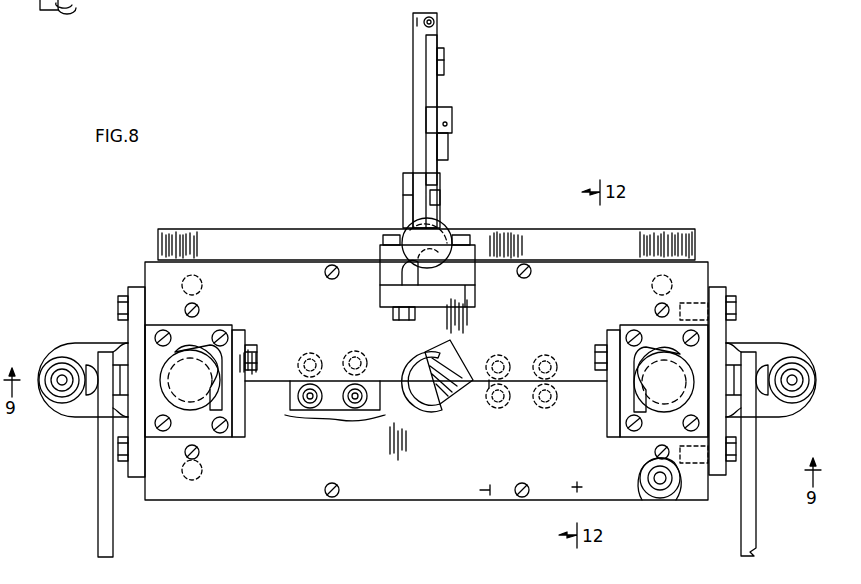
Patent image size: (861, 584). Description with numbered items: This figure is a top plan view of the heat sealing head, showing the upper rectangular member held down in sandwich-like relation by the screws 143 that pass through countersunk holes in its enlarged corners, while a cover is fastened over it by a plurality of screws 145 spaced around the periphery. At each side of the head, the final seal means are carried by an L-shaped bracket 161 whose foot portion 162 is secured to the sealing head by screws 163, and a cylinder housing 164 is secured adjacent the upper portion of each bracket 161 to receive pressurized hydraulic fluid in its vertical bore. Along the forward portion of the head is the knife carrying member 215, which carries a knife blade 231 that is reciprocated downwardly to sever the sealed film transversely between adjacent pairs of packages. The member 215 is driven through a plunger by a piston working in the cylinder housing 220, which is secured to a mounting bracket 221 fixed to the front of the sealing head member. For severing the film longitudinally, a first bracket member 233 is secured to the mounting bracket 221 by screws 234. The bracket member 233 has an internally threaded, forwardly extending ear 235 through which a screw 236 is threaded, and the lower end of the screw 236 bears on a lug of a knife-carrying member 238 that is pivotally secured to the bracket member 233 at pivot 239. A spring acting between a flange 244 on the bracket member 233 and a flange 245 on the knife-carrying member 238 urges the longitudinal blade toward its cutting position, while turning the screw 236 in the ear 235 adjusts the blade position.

The screws 143 is at (195, 283).
The screws 145 is at (332, 265).
The L-shaped bracket 161 is at (245, 340).
The foot portion 162 is at (652, 326).
The screws 163 is at (156, 338).
The cylinder housing 164 is at (595, 354).
The knife carrying member 215 is at (626, 240).
The cylinder housing 220 is at (400, 281).
The mounting bracket 221 is at (466, 299).
The knife blade 231 is at (698, 262).
The first bracket member 233 is at (413, 86).
The screws 234 is at (403, 198).
The ear 235 is at (413, 22).
The screw 236 is at (434, 23).
The knife-carrying member 238 is at (433, 92).
The pivot 239 is at (444, 68).
The flange 244 is at (452, 120).
The flange 245 is at (448, 152).